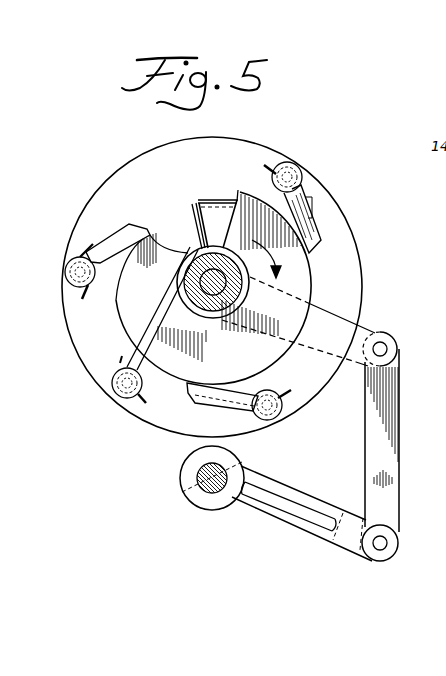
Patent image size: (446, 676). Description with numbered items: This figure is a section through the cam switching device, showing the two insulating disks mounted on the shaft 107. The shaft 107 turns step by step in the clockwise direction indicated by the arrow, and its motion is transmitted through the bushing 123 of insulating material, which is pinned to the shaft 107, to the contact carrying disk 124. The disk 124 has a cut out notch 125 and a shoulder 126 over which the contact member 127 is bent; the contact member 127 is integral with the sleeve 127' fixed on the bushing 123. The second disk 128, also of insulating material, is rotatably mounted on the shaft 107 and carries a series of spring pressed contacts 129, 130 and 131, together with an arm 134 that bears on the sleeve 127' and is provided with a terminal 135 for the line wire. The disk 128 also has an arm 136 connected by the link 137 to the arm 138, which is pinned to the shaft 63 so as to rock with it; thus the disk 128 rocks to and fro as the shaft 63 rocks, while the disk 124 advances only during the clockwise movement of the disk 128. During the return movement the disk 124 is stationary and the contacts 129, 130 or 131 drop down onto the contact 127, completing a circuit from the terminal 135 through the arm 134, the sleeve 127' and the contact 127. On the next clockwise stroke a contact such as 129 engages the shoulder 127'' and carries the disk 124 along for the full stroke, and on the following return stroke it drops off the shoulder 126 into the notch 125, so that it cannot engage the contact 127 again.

The shaft 63 is at (214, 495).
The shaft 107 is at (216, 275).
The bushing 123 is at (247, 300).
The contact carrying disk 124 is at (312, 268).
The cut out notch 125 is at (168, 240).
The shoulder 126 is at (193, 203).
The contact member 127 is at (213, 201).
The sleeve 127' is at (202, 335).
The shoulder 127'' is at (262, 181).
The disk 128 is at (73, 330).
The spring pressed contact 129 is at (110, 232).
The spring pressed contact 130 is at (213, 409).
The spring pressed contact 131 is at (312, 219).
The arm 134 is at (148, 318).
The terminal 135 is at (120, 390).
The arm 136 is at (368, 329).
The link 137 is at (393, 445).
The arm 138 is at (294, 527).